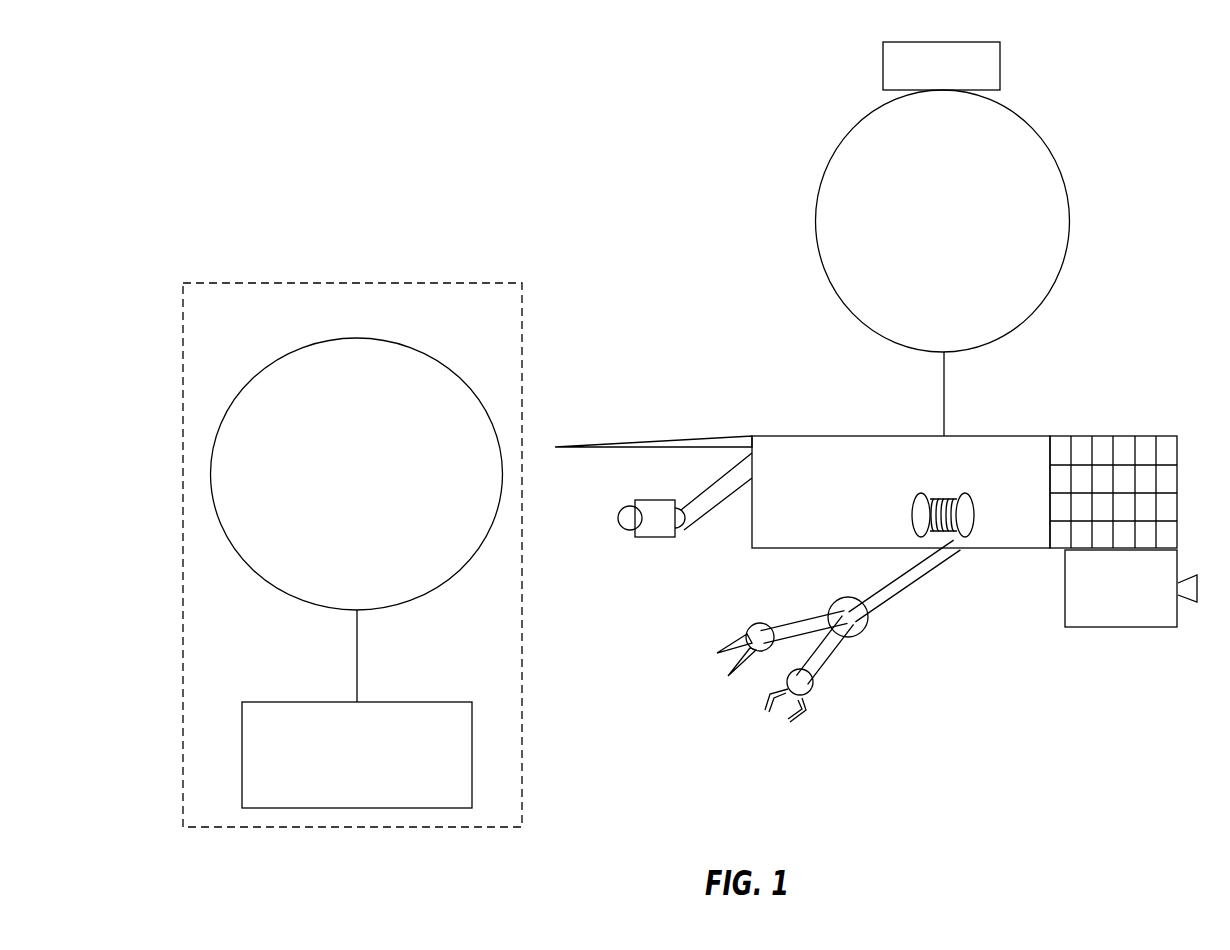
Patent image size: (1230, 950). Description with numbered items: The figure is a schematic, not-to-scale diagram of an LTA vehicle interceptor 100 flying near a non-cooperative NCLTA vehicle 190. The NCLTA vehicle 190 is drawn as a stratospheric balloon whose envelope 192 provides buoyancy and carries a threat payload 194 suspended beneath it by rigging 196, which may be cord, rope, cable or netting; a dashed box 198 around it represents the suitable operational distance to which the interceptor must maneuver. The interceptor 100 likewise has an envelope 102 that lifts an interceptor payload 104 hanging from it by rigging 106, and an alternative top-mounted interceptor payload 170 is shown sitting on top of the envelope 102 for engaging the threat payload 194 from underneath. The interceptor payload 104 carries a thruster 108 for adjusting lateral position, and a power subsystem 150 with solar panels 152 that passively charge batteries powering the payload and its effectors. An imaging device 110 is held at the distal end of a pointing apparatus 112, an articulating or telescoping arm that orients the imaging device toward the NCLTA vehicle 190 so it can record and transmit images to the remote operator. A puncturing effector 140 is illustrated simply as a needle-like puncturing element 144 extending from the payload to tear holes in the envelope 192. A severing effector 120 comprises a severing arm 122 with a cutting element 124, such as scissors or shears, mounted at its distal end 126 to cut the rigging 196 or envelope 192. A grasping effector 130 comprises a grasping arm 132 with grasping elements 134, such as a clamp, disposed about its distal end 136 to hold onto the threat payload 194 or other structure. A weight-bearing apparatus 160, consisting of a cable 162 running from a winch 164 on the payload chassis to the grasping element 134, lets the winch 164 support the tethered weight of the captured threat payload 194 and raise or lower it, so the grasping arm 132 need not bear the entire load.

The LTA vehicle interceptor 100 is at (668, 209).
The envelope 102 is at (921, 317).
The interceptor payload 104 is at (839, 411).
The rigging 106 is at (948, 417).
The thruster 108 is at (1100, 622).
The imaging device 110 is at (653, 527).
The pointing apparatus 112 is at (710, 498).
The severing effector 120 is at (705, 663).
The severing arm 122 is at (792, 623).
The cutting element 124 is at (730, 642).
The distal end of severing arm 126 is at (758, 632).
The grasping effector 130 is at (769, 727).
The grasping arm 132 is at (830, 662).
The grasping element 134 is at (797, 723).
The distal end of grasping arm 136 is at (797, 680).
The puncturing effector 140 is at (597, 406).
The puncturing element 144 is at (641, 440).
The power subsystem 150 is at (1105, 426).
The solar panel 152 is at (1122, 478).
The weight-bearing apparatus 160 is at (990, 518).
The cable 162 is at (837, 657).
The winch 164 is at (917, 500).
The top-mounted interceptor payload 170 is at (914, 87).
The NCLTA vehicle 190 is at (105, 470).
The envelope 192 is at (336, 585).
The threat payload 194 is at (419, 798).
The rigging 196 is at (357, 672).
The operational distance 198 is at (352, 283).